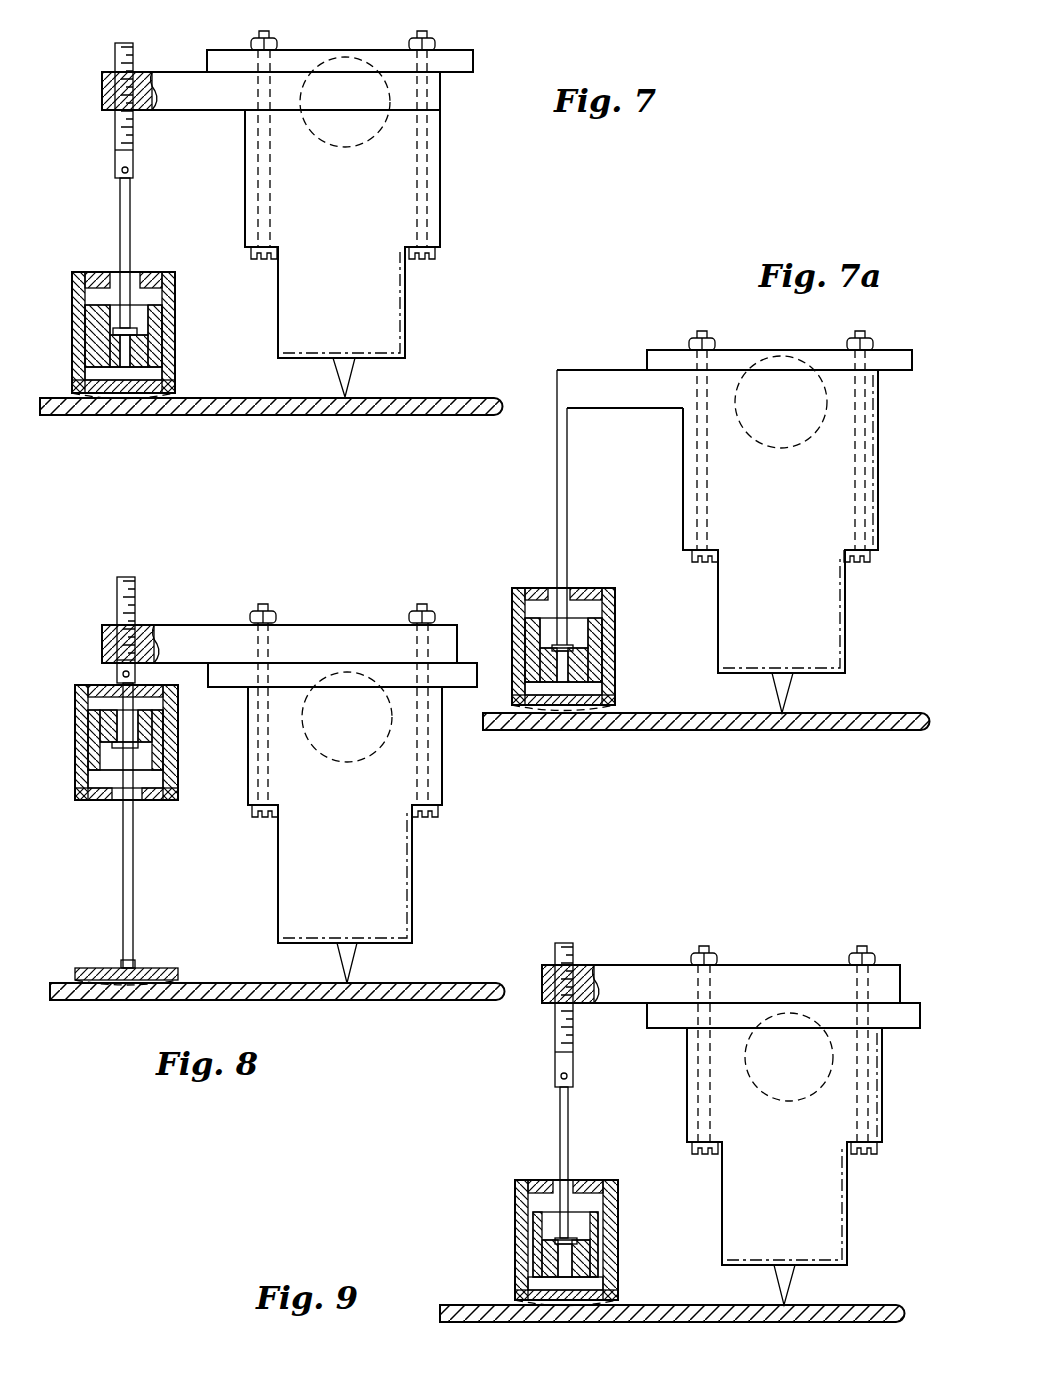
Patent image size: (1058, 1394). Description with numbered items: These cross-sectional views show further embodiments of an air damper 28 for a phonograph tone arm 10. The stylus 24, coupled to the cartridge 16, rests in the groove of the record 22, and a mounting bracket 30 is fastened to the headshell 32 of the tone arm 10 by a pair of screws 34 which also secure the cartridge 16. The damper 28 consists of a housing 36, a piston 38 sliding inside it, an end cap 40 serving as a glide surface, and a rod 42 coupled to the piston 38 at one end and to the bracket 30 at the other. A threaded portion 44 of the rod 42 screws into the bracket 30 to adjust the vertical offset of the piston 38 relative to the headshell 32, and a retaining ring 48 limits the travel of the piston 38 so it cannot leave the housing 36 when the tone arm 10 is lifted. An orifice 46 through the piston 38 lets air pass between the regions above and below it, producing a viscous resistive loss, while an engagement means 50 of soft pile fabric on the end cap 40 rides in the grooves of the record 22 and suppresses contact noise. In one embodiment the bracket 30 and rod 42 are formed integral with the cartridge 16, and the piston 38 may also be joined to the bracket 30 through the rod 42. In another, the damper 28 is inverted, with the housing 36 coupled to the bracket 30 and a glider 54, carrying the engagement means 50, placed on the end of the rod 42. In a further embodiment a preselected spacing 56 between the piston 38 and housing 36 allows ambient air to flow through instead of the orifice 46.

In FIG. 7, the tone arm 10 is at (380, 118).
In FIG. 7A, the tone arm 10 is at (825, 415).
In FIG. 8, the tone arm 10 is at (385, 745).
In FIG. 9, the tone arm 10 is at (835, 1080).
In FIG. 7, the cartridge 16 is at (407, 288).
In FIG. 7A, the cartridge 16 is at (848, 592).
In FIG. 8, the cartridge 16 is at (415, 870).
In FIG. 9, the cartridge 16 is at (850, 1210).
In FIG. 7, the record 22 is at (472, 398).
In FIG. 7A, the record 22 is at (893, 713).
In FIG. 8, the record 22 is at (468, 983).
In FIG. 9, the record 22 is at (880, 1305).
In FIG. 7, the stylus 24 is at (348, 372).
In FIG. 7A, the stylus 24 is at (788, 690).
In FIG. 8, the stylus 24 is at (350, 960).
In FIG. 9, the stylus 24 is at (778, 1296).
In FIG. 7, the damper 28 is at (132, 304).
In FIG. 7A, the damper 28 is at (583, 627).
In FIG. 8, the damper 28 is at (132, 765).
In FIG. 9, the damper 28 is at (547, 1217).
In FIG. 7, the mounting bracket 30 is at (340, 61).
In FIG. 7A, the mounting bracket 30 is at (557, 380).
In FIG. 8, the mounting bracket 30 is at (457, 640).
In FIG. 9, the mounting bracket 30 is at (900, 975).
In FIG. 7, the headshell 32 is at (102, 83).
In FIG. 7A, the headshell 32 is at (810, 350).
In FIG. 8, the headshell 32 is at (465, 665).
In FIG. 9, the headshell 32 is at (920, 1030).
In FIG. 7, the screws 34 is at (262, 38).
In FIG. 7A, the screws 34 is at (702, 330).
In FIG. 8, the screws 34 is at (264, 607).
In FIG. 9, the screws 34 is at (705, 945).
In FIG. 7, the housing 36 is at (175, 305).
In FIG. 7A, the housing 36 is at (617, 650).
In FIG. 8, the housing 36 is at (75, 740).
In FIG. 9, the housing 36 is at (620, 1240).
In FIG. 7, the piston 38 is at (150, 345).
In FIG. 7A, the piston 38 is at (595, 640).
In FIG. 8, the piston 38 is at (175, 750).
In FIG. 9, the piston 38 is at (595, 1260).
In FIG. 7, the end cap 40 is at (85, 373).
In FIG. 7A, the end cap 40 is at (600, 690).
In FIG. 9, the end cap 40 is at (528, 1287).
In FIG. 7, the rod 42 is at (130, 200).
In FIG. 7A, the rod 42 is at (557, 530).
In FIG. 8, the rod 42 is at (130, 873).
In FIG. 9, the rod 42 is at (560, 1125).
In FIG. 7, the threaded portion 44 is at (133, 125).
In FIG. 9, the threaded portion 44 is at (555, 1048).
In FIG. 7, the orifice 46 is at (110, 331).
In FIG. 7A, the orifice 46 is at (542, 665).
In FIG. 8, the orifice 46 is at (160, 740).
In FIG. 7, the retaining ring 48 is at (145, 272).
In FIG. 7A, the retaining ring 48 is at (585, 588).
In FIG. 8, the retaining ring 48 is at (152, 800).
In FIG. 9, the retaining ring 48 is at (590, 1180).
In FIG. 7, the engagement means 50 is at (175, 390).
In FIG. 7A, the engagement means 50 is at (615, 705).
In FIG. 8, the engagement means 50 is at (178, 975).
In FIG. 9, the engagement means 50 is at (618, 1297).
In FIG. 8, the glider 54 is at (145, 968).
In FIG. 9, the spacing 56 is at (530, 1225).